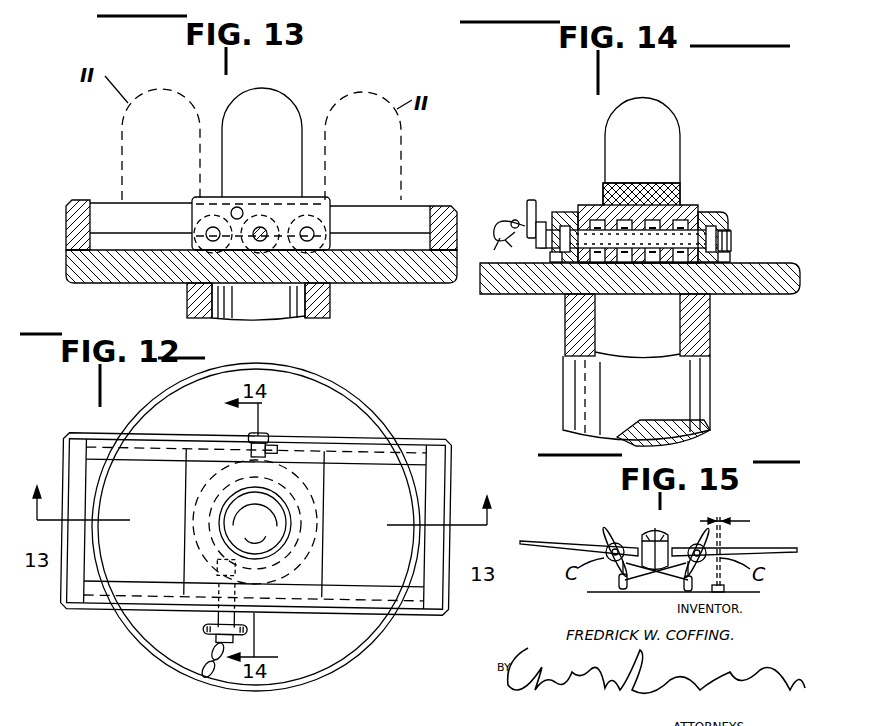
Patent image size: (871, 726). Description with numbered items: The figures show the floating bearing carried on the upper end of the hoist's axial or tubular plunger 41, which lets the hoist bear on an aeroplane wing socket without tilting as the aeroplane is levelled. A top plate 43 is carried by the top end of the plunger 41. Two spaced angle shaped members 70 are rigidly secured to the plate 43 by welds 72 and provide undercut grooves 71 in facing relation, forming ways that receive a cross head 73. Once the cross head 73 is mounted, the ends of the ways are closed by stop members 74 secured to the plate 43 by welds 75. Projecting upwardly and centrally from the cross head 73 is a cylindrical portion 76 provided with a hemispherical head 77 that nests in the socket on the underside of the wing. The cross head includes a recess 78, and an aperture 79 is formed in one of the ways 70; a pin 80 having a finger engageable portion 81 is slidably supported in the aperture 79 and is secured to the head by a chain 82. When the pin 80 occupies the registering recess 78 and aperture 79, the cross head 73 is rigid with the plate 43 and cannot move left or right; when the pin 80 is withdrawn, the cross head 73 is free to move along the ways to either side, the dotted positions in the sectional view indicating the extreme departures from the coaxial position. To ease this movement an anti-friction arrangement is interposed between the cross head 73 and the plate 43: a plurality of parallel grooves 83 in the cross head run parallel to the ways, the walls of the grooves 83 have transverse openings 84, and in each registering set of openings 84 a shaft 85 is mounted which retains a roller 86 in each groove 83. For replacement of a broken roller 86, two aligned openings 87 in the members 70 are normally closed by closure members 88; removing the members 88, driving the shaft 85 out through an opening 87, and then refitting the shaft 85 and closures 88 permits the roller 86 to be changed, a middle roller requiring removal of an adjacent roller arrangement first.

In FIG. 13, the tubular plunger 41 is at (320, 318).
In FIG. 14, the tubular plunger 41 is at (704, 356).
In FIG. 12, the tubular plunger 41 is at (186, 485).
In FIG. 13, the top plate 43 is at (415, 284).
In FIG. 14, the top plate 43 is at (763, 295).
In FIG. 12, the top plate 43 is at (148, 630).
In FIG. 13, the angle shaped members 70 is at (108, 203).
In FIG. 14, the angle shaped members 70 is at (562, 212).
In FIG. 12, the angle shaped members 70 is at (362, 447).
In FIG. 13, the undercut grooves 71 is at (403, 245).
In FIG. 14, the welds 72 is at (551, 258).
In FIG. 13, the cross head 73 is at (266, 197).
In FIG. 14, the cross head 73 is at (582, 206).
In FIG. 12, the cross head 73 is at (324, 488).
In FIG. 13, the stop members 74 is at (67, 216).
In FIG. 12, the stop members 74 is at (73, 476).
In FIG. 13, the welds 75 is at (67, 251).
In FIG. 13, the cylindrical portion 76 is at (285, 145).
In FIG. 14, the cylindrical portion 76 is at (645, 158).
In FIG. 12, the cylindrical portion 76 is at (302, 535).
In FIG. 13, the hemispherical head 77 is at (275, 91).
In FIG. 14, the hemispherical head 77 is at (654, 98).
In FIG. 12, the hemispherical head 77 is at (255, 524).
In FIG. 13, the recess 78 is at (239, 207).
In FIG. 12, the recess 78 is at (220, 564).
In FIG. 12, the aperture 79 is at (212, 603).
In FIG. 12, the pin 80 is at (288, 582).
In FIG. 14, the finger engageable portion 81 is at (527, 207).
In FIG. 12, the finger engageable portion 81 is at (251, 630).
In FIG. 14, the chain 82 is at (495, 243).
In FIG. 12, the chain 82 is at (213, 680).
In FIG. 14, the grooves 83 is at (698, 181).
In FIG. 14, the transverse openings 84 is at (648, 188).
In FIG. 13, the shaft 85 is at (313, 236).
In FIG. 14, the shaft 85 is at (613, 190).
In FIG. 13, the roller 86 is at (216, 252).
In FIG. 14, the roller 86 is at (588, 264).
In FIG. 14, the aligned openings 87 is at (556, 270).
In FIG. 12, the aligned openings 87 is at (273, 451).
In FIG. 14, the closure members 88 is at (732, 242).
In FIG. 12, the closure members 88 is at (266, 449).